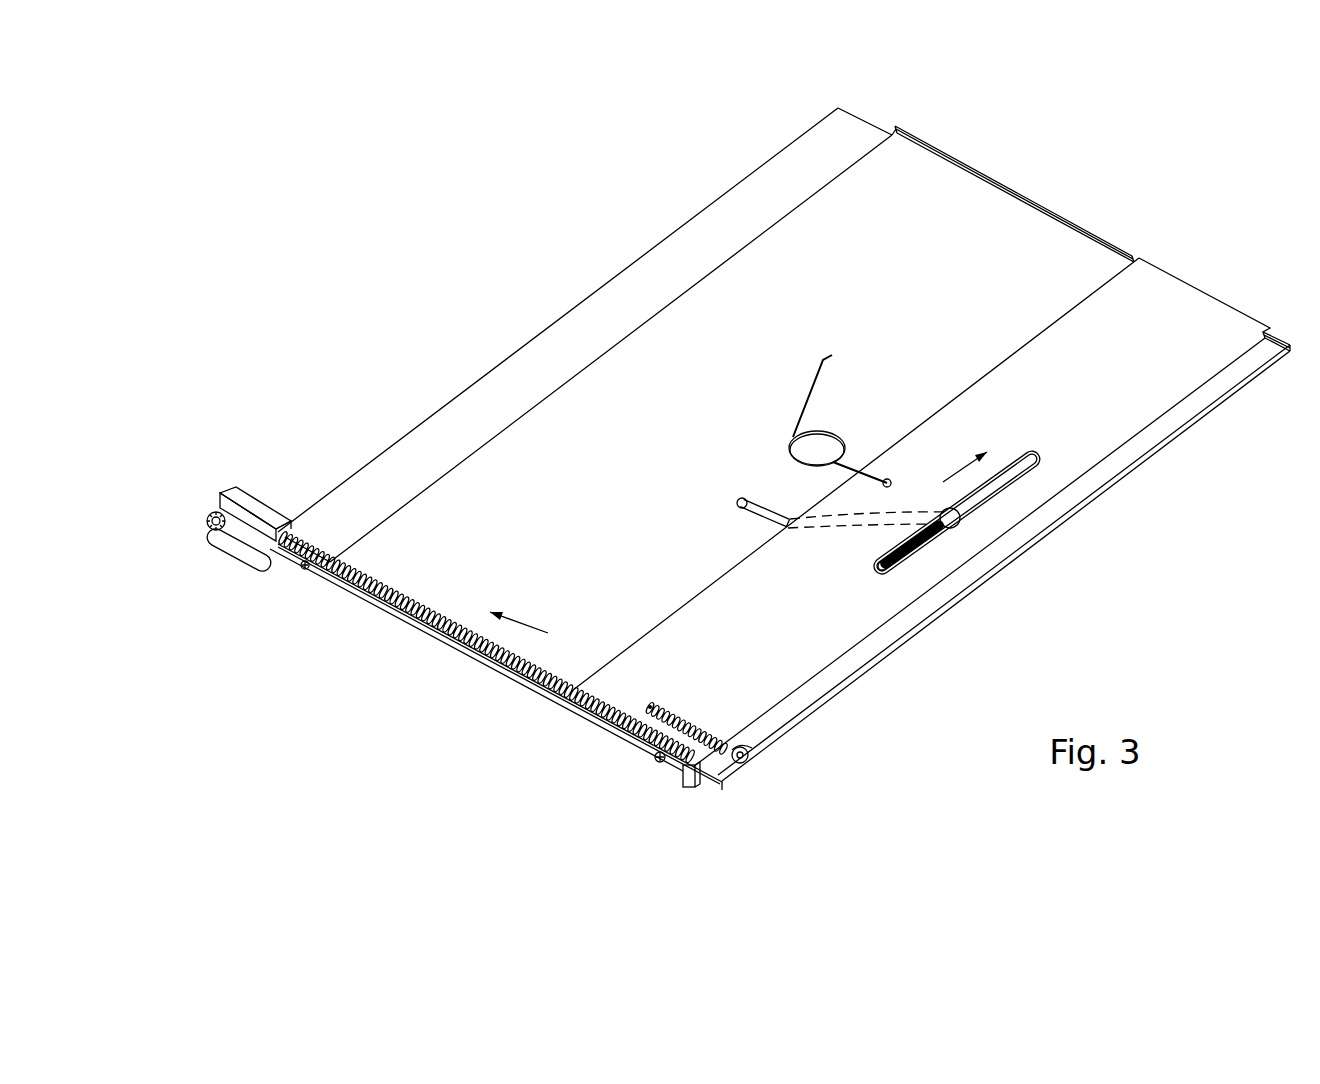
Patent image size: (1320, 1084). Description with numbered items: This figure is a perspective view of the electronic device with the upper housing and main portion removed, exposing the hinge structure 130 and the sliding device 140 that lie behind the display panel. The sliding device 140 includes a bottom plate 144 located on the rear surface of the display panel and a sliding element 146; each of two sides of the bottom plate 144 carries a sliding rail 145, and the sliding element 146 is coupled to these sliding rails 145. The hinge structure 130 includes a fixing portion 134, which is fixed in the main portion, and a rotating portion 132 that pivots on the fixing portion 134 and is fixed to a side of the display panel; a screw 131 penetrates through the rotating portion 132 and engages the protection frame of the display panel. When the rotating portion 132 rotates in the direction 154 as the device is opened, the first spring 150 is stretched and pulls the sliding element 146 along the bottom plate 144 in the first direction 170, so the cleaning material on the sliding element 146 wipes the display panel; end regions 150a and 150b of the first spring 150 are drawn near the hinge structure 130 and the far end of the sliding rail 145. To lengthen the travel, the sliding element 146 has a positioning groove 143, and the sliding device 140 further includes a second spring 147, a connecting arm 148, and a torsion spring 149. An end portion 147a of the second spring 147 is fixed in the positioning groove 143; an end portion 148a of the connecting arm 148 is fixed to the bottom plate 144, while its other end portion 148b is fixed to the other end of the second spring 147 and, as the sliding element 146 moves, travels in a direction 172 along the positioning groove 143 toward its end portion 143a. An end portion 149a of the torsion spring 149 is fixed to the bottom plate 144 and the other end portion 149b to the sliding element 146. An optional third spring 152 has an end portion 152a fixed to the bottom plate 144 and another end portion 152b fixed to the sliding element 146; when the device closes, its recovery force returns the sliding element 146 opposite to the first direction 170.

The hinge structure 130 is at (225, 512).
The screw 131 is at (655, 760).
The rotating portion 132 is at (293, 538).
The fixing portion 134 is at (242, 574).
The sliding device 140 is at (1130, 400).
The positioning groove 143 is at (1007, 495).
The end portion of the positioning groove 143a is at (1050, 458).
The bottom plate 144 is at (1017, 214).
The sliding rail 145 is at (417, 630).
The sliding element 146 is at (1180, 302).
The second spring 147 is at (928, 548).
The end portion of the second spring 147a is at (882, 578).
The connecting arm 148 is at (735, 510).
The end portion of the connecting arm 148a is at (742, 497).
The end portion of the connecting arm 148b is at (960, 526).
The torsion spring 149 is at (806, 392).
The end portion of the torsion spring 149a is at (832, 355).
The end portion of the torsion spring 149b is at (886, 478).
The first spring 150 is at (412, 596).
The worm gear 150a is at (224, 539).
The end bracket 150b is at (694, 790).
The third spring 152 is at (750, 754).
The end portion of the third spring 152a is at (741, 764).
The end portion of the third spring 152b is at (651, 705).
The direction 154 is at (267, 487).
The first direction 170 is at (521, 613).
The direction 172 is at (957, 459).